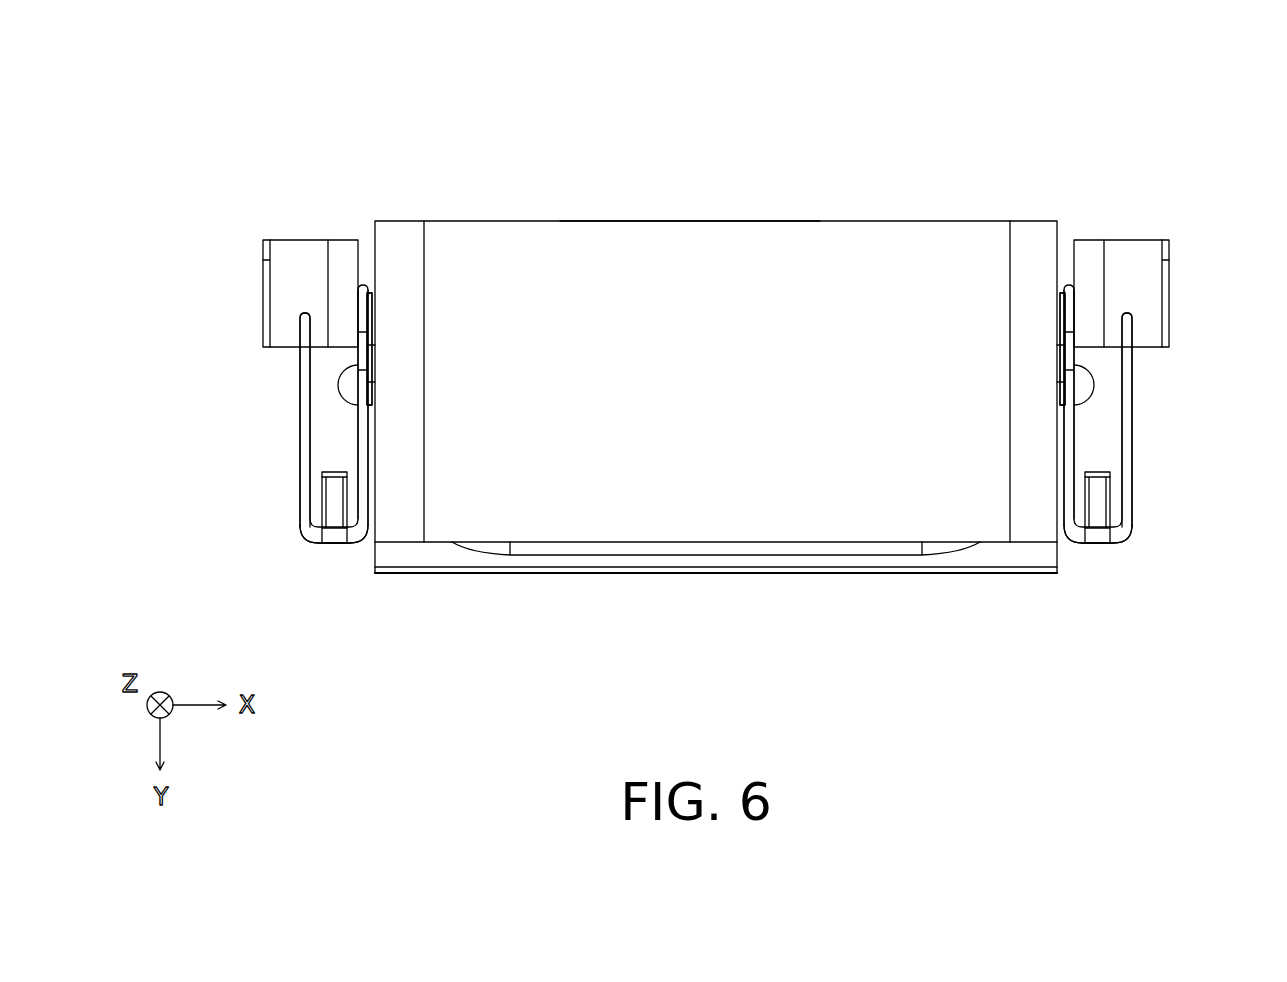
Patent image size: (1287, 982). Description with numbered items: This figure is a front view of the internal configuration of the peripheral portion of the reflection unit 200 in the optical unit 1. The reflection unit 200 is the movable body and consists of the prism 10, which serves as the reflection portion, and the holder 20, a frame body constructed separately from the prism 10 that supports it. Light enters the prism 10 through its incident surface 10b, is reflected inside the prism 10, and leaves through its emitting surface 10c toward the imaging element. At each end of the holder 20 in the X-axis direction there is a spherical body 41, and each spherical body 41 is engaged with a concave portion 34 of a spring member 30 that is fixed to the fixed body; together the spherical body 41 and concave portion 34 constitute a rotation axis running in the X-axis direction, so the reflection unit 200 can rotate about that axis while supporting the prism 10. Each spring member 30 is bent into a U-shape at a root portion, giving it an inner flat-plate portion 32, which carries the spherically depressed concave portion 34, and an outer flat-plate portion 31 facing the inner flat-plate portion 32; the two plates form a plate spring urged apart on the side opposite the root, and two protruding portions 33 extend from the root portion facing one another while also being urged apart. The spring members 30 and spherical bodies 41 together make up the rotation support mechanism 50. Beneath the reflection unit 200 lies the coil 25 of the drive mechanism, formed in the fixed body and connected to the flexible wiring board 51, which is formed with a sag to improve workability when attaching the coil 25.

The optical unit 1 is at (1146, 165).
The reflection unit 200 is at (766, 162).
The prism 10 is at (885, 221).
The incident surface 10b is at (680, 221).
The emitting surface 10c is at (550, 290).
The holder 20 is at (1021, 221).
The coil 25 is at (855, 555).
The spring member 30 is at (300, 396).
The outer flat-plate portion 31 is at (300, 358).
The inner flat-plate portion 32 is at (355, 437).
The protruding portion 33 is at (338, 497).
The concave portion 34 is at (360, 380).
The spherical body 41 is at (375, 375).
The rotation support mechanism 50 is at (290, 537).
The flexible wiring board 51 is at (340, 250).